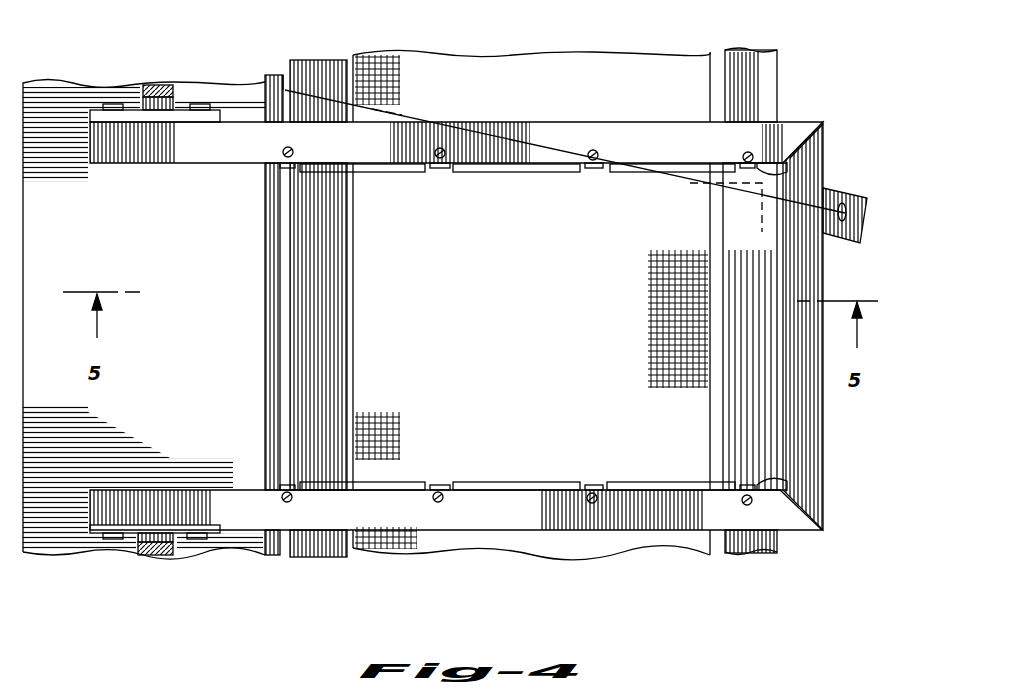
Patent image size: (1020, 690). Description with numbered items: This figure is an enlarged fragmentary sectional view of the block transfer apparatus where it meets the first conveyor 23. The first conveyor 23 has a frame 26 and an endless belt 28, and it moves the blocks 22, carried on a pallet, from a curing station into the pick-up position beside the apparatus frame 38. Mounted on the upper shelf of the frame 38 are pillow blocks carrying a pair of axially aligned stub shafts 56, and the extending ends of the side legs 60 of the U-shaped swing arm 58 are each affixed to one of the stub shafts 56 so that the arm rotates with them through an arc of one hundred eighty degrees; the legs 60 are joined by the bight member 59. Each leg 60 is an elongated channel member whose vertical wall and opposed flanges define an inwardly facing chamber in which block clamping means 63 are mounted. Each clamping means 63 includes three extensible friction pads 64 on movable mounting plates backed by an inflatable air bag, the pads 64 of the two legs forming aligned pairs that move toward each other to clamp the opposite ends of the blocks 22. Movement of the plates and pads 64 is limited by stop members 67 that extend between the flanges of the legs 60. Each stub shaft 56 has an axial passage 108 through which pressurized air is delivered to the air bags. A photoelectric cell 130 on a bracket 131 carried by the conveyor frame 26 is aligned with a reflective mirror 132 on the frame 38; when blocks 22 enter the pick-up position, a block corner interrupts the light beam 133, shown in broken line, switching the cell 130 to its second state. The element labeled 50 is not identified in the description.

The blocks 22 is at (757, 283).
The first conveyor 23 is at (651, 45).
The frame 26 is at (765, 65).
The endless belt 28 is at (522, 55).
The frame 38 is at (71, 555).
The lower panel edge 50 is at (612, 540).
The stub shafts 56 is at (175, 101).
The swing arm 58 is at (823, 129).
The bight member 59 is at (810, 424).
The side legs 60 is at (650, 128).
The block clamping means 63 is at (500, 176).
The friction pads 64 is at (370, 172).
The stop members 67 is at (283, 165).
The axial passage 108 is at (160, 85).
The photoelectric cell 130 is at (862, 210).
The bracket 131 is at (585, 151).
The reflective mirror 132 is at (284, 88).
The light beam 133 is at (403, 113).